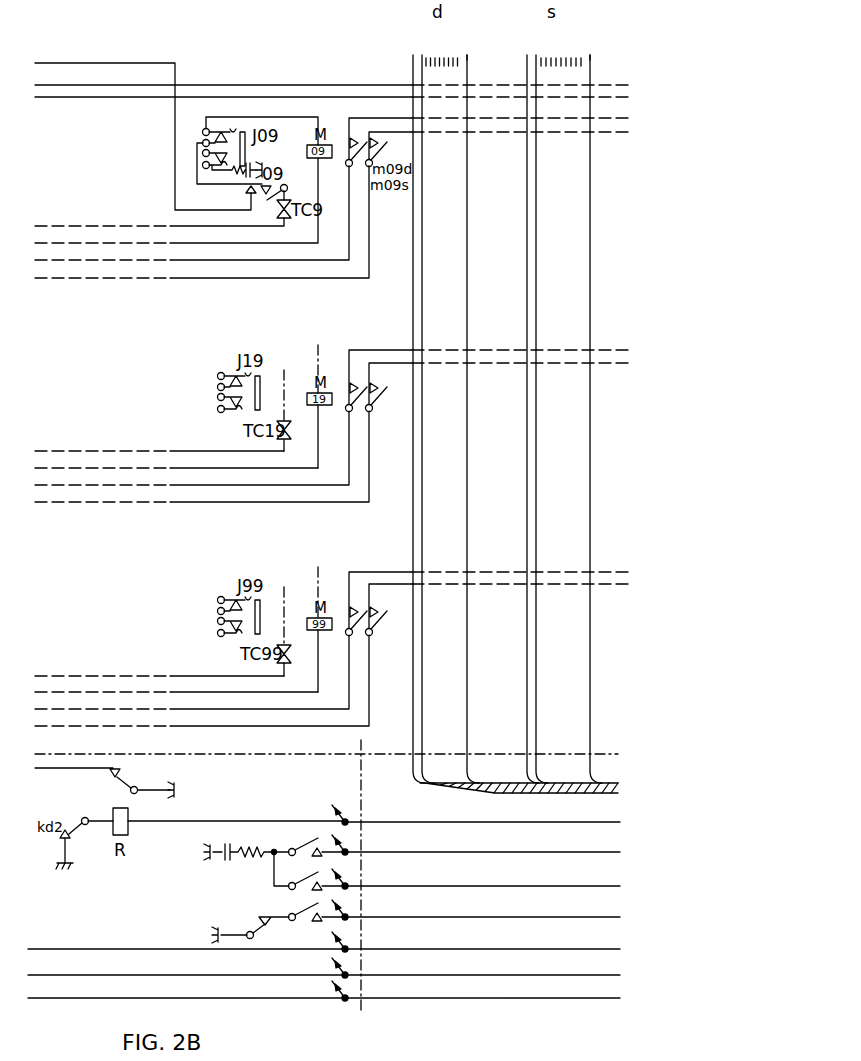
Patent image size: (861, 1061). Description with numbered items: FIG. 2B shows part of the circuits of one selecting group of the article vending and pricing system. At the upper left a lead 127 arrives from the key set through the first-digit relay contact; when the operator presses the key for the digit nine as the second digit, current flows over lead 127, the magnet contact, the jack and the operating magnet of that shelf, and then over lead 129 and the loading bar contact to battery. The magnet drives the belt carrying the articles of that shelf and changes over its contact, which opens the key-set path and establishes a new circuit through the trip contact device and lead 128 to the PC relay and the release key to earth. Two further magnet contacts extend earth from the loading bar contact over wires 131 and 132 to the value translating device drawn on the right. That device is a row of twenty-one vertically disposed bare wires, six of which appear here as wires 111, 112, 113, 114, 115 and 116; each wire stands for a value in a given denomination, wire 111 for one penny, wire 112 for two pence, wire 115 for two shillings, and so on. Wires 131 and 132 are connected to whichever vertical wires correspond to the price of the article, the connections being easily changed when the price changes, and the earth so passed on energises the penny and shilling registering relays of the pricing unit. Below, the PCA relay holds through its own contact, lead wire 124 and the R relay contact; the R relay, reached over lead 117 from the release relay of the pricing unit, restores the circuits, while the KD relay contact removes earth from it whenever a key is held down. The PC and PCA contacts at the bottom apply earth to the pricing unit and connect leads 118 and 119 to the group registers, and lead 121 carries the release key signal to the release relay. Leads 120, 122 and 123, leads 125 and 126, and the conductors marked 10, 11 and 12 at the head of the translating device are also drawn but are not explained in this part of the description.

The conductor 10 is at (594, 48).
The conductor 11 is at (472, 48).
The conductor 12 is at (494, 51).
The vertical wire 111 is at (407, 419).
The vertical wire 112 is at (437, 419).
The vertical wire 113 is at (462, 419).
The vertical wire 114 is at (521, 419).
The vertical wire 115 is at (551, 419).
The vertical wire 116 is at (605, 419).
The lead 117 is at (358, 813).
The lead 118 is at (416, 844).
The lead 119 is at (450, 871).
The line 120 is at (420, 921).
The lead 121 is at (328, 939).
The line 122 is at (328, 965).
The line 123 is at (328, 988).
The lead wire 124 is at (104, 772).
The line 125 is at (332, 106).
The line 126 is at (332, 76).
The lead 127 is at (143, 127).
The lead 128 is at (159, 215).
The lead 129 is at (176, 200).
The wire 131 is at (192, 213).
The wire 132 is at (202, 222).